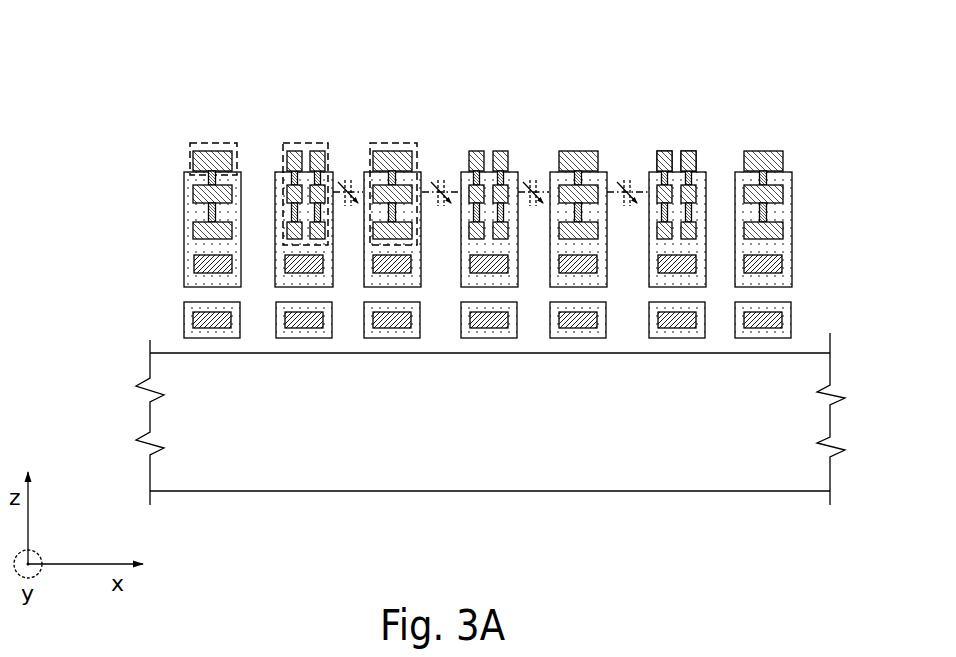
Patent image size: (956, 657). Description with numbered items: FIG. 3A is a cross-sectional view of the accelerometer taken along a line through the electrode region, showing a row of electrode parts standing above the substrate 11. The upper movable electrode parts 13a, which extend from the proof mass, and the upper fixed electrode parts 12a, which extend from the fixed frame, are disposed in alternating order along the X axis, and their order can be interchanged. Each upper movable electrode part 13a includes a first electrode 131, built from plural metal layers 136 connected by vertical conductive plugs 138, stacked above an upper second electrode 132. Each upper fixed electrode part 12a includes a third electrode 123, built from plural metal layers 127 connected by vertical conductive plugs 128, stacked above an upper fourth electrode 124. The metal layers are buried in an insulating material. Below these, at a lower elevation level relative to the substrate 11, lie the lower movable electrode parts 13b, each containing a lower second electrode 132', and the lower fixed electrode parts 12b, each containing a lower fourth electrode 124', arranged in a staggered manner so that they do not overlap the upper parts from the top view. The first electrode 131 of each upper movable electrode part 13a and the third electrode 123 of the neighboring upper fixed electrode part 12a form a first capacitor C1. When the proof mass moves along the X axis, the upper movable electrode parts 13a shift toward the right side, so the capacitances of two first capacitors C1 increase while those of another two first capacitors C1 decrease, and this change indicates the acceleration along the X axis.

The substrate 11 is at (193, 418).
The upper fixed electrode part 12a is at (176, 151).
The upper movable electrode part 13a is at (271, 150).
The lower fixed electrode part 12b is at (303, 354).
The lower movable electrode part 13b is at (223, 354).
The third electrode 123 is at (200, 211).
The upper fourth electrode 124 is at (183, 252).
The lower fourth electrode 124' is at (417, 308).
The metal layers 127 is at (208, 150).
The vertical conductive plugs 128 is at (192, 186).
The first electrode 131 is at (305, 150).
The upper second electrode 132 is at (137, 216).
The lower second electrode 132' is at (412, 328).
The metal layers 136 is at (316, 151).
The vertical conductive plugs 138 is at (645, 177).
The first capacitor C1 is at (487, 213).